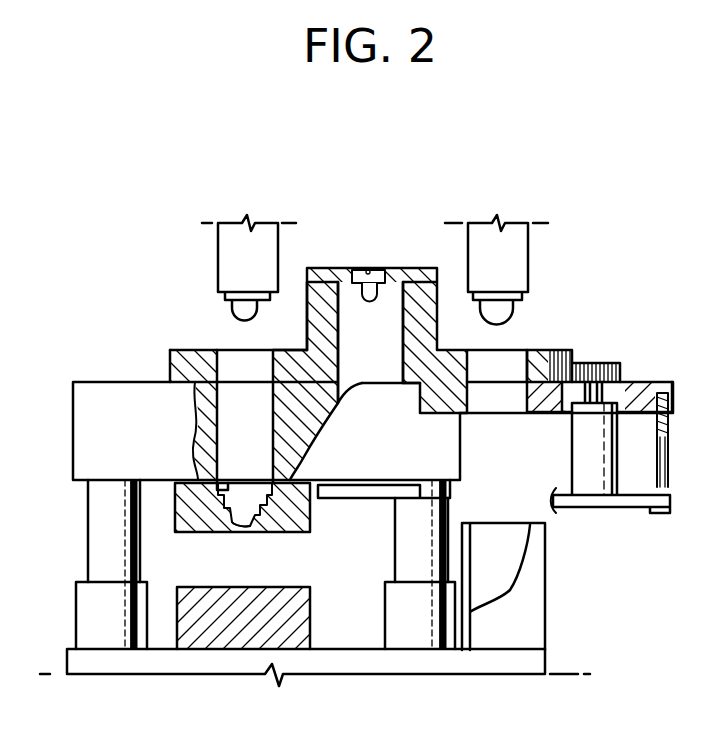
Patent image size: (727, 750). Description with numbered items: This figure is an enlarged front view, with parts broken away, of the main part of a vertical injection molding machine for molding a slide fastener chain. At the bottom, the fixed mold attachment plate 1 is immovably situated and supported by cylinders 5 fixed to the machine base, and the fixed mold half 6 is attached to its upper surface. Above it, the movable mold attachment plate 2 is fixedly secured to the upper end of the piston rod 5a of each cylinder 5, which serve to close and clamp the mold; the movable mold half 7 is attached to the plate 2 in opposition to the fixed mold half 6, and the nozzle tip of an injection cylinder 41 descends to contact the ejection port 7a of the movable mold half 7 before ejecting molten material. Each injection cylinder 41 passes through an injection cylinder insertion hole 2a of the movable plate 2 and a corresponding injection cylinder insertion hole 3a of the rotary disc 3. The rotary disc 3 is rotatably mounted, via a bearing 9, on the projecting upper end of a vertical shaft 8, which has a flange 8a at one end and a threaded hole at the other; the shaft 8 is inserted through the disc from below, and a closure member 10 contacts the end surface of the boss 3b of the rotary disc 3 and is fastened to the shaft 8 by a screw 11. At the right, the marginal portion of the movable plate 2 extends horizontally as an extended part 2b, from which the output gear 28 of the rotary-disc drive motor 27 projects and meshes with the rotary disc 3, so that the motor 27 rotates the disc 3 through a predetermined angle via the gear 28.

The fixed mold attachment plate 1 is at (138, 660).
The movable mold attachment plate 2 is at (93, 412).
The injection cylinder insertion hole 2a is at (237, 420).
The extended part 2b is at (648, 380).
The rotary disc 3 is at (291, 347).
The injection cylinder insertion hole 3a is at (232, 362).
The boss 3b is at (305, 348).
The cylinder 5 is at (77, 617).
The piston rod 5a is at (87, 542).
The fixed mold half 6 is at (210, 640).
The movable mold half 7 is at (300, 503).
The ejection port 7a is at (240, 518).
The vertical shaft 8 is at (387, 290).
The flange 8a is at (447, 495).
The bearing 9 is at (325, 298).
The closure member 10 is at (417, 270).
The screw 11 is at (373, 268).
The rotary-disc drive motor 27 is at (585, 450).
The output gear 28 is at (603, 360).
The injection cylinder 41 is at (235, 258).